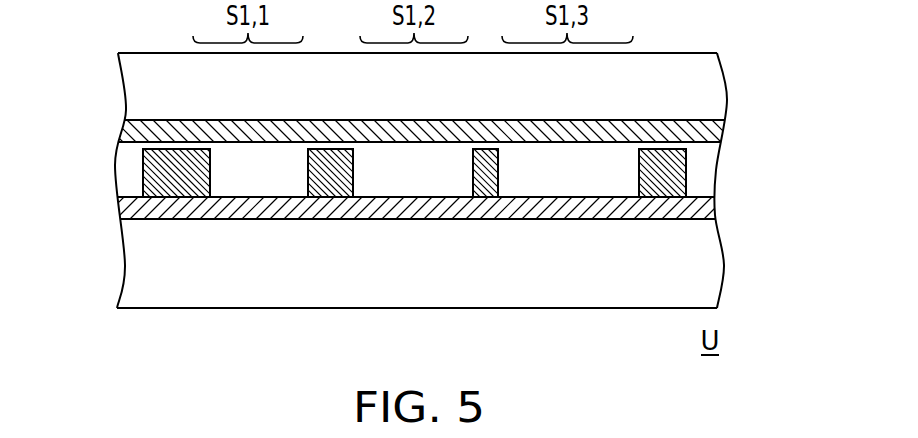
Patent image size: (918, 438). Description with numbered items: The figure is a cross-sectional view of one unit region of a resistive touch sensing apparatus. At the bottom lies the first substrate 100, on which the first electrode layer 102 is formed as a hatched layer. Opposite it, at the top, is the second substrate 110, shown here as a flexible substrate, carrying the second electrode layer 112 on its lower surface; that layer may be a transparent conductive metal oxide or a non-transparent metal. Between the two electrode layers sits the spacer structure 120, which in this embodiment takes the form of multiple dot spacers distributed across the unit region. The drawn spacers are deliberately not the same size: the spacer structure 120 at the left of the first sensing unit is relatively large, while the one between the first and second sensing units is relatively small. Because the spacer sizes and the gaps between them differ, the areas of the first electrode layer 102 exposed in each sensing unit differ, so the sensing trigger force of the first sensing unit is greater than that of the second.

The first substrate 100 is at (712, 291).
The first electrode layer 102 is at (712, 210).
The second substrate 110 is at (716, 90).
The second electrode layer 112 is at (716, 131).
The spacer structure 120 is at (148, 170).